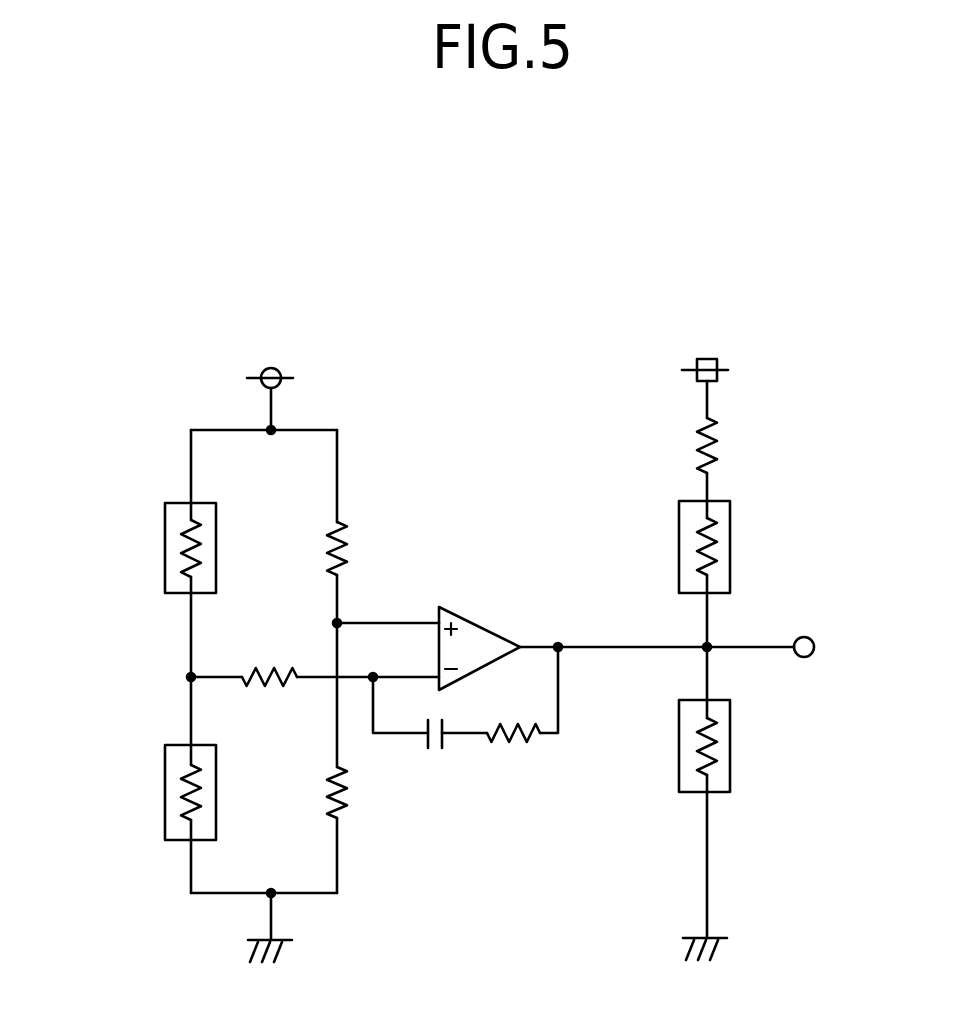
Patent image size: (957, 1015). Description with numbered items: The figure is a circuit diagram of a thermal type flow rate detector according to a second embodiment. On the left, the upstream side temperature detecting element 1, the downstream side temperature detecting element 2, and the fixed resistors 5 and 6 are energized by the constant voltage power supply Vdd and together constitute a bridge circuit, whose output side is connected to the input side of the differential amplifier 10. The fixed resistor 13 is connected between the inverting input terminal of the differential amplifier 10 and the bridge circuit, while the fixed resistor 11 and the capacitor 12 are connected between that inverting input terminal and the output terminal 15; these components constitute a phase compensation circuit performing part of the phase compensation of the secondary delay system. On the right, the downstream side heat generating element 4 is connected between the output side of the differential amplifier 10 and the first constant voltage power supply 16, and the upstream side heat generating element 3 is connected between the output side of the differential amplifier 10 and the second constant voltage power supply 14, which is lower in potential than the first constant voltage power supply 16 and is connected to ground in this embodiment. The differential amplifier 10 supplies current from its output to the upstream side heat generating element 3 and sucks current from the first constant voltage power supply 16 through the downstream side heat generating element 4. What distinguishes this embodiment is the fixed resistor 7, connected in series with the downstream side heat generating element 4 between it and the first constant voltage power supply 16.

The upstream side temperature detecting element 1 is at (178, 787).
The downstream side temperature detecting element 2 is at (172, 548).
The upstream side heat generating element 3 is at (722, 757).
The downstream side heat generating element 4 is at (722, 538).
The fixed resistor 5 is at (342, 530).
The fixed resistor 6 is at (343, 783).
The fixed resistor 7 is at (715, 450).
The differential amplifier 10 is at (470, 617).
The fixed resistor 11 is at (517, 740).
The capacitor 12 is at (445, 740).
The fixed resistor 13 is at (268, 672).
The second constant voltage power supply 14 is at (718, 935).
The output terminal 15 is at (808, 637).
The first constant voltage power supply 16 is at (718, 362).
The constant voltage power supply Vdd is at (296, 370).